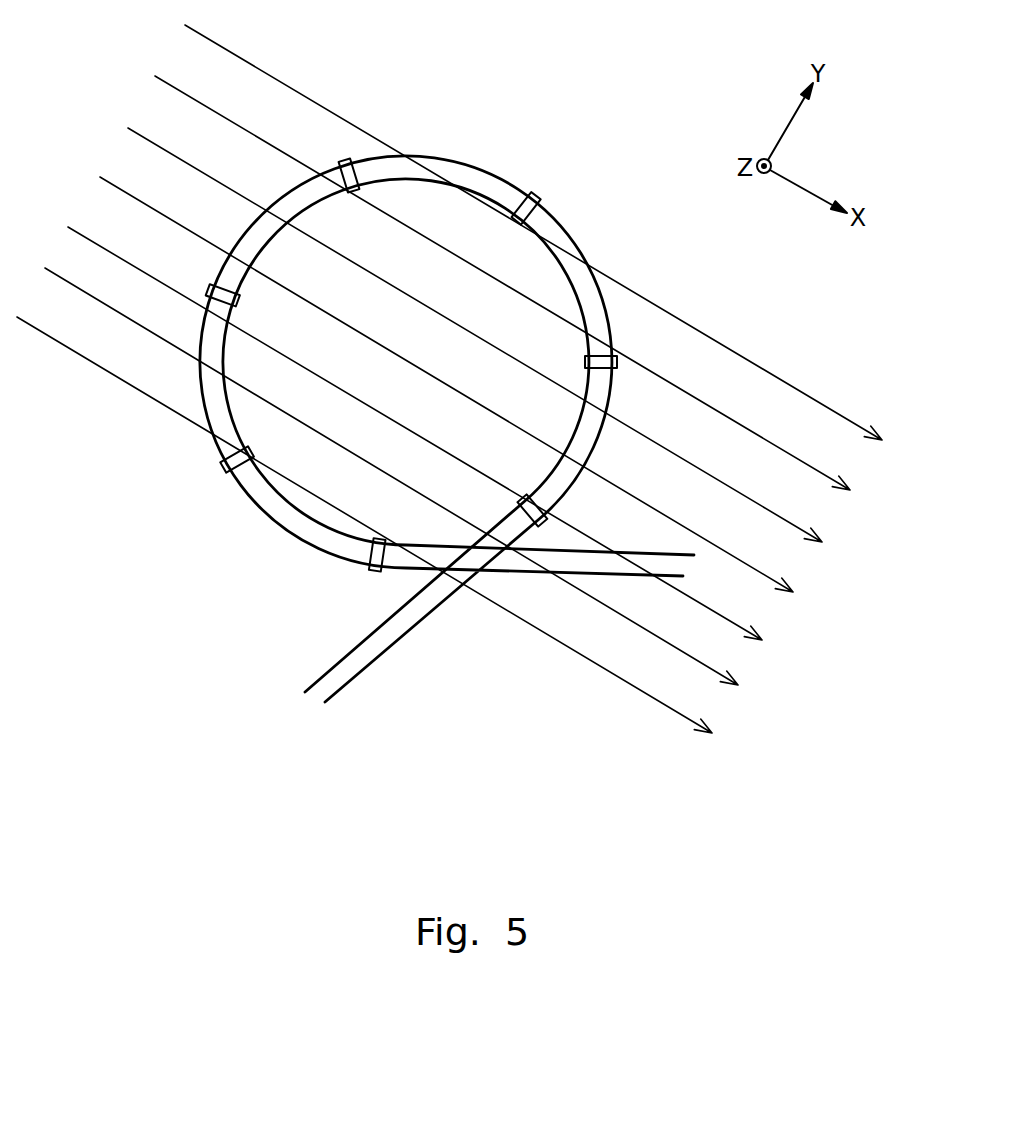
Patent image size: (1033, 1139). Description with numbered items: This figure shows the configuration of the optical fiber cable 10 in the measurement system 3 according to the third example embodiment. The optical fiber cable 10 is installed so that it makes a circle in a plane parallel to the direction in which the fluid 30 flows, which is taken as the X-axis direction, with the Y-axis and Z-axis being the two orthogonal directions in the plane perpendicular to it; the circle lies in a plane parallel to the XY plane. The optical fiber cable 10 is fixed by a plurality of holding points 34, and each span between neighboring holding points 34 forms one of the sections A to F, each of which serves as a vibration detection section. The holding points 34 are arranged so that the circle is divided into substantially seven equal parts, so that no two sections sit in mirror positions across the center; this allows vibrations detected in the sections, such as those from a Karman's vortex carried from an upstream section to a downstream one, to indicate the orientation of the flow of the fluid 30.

The measurement system 3 is at (458, 55).
The optical fiber cable 10 is at (614, 292).
The fluid 30 is at (725, 347).
The holding points 34 is at (343, 157).